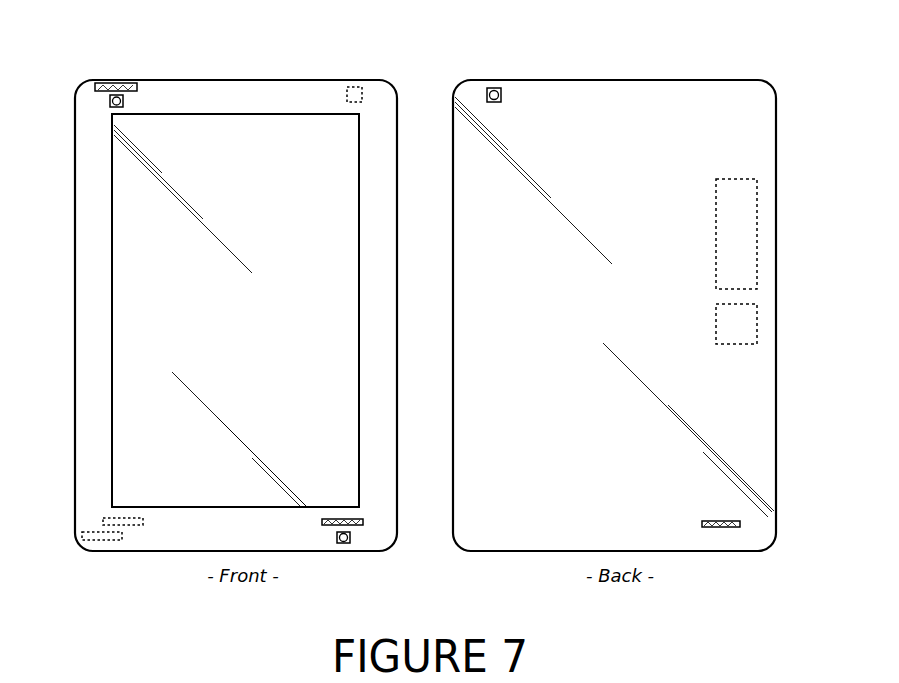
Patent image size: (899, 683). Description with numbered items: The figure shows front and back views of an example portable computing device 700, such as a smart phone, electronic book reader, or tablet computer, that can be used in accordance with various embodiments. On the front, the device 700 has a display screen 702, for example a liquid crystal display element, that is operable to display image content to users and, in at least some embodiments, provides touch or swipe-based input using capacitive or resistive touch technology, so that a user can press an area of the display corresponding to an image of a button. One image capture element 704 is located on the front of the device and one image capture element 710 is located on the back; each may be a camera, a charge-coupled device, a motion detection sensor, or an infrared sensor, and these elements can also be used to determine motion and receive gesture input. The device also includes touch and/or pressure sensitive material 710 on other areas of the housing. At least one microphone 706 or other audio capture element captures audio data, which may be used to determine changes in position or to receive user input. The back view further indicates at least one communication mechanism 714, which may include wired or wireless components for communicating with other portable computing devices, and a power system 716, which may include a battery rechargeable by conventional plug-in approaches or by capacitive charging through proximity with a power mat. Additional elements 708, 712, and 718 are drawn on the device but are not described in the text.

The portable computing device 700 is at (803, 88).
The display screen 702 is at (112, 227).
The image capture element 704 is at (110, 101).
The microphone 706 is at (130, 83).
The microphone 708 is at (345, 526).
The image capture element 710 is at (350, 87).
The speaker 712 is at (125, 526).
The communication mechanism 714 is at (755, 250).
The power system 716 is at (755, 323).
The connector / port 718 is at (100, 540).